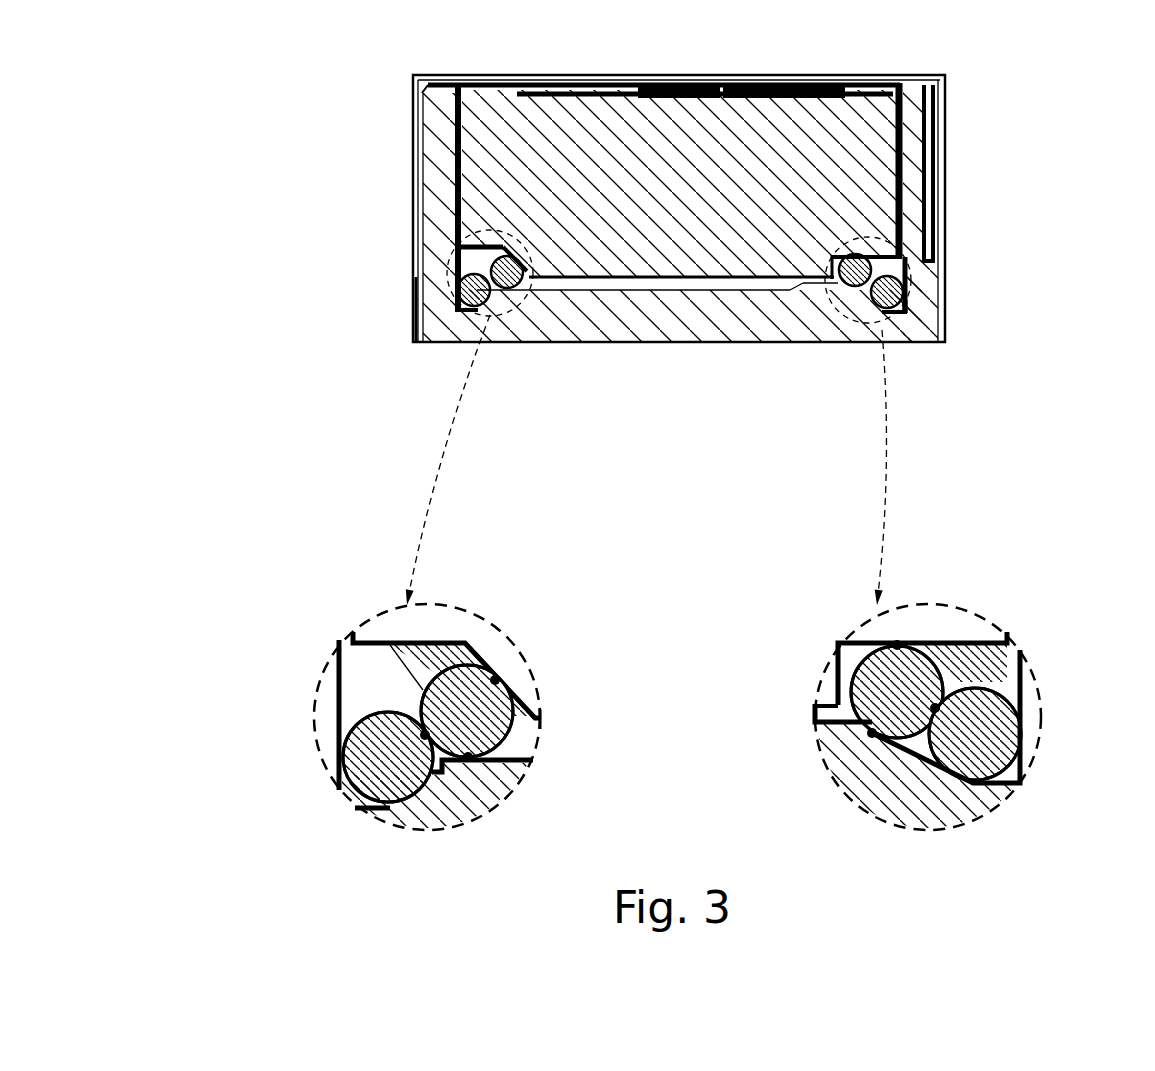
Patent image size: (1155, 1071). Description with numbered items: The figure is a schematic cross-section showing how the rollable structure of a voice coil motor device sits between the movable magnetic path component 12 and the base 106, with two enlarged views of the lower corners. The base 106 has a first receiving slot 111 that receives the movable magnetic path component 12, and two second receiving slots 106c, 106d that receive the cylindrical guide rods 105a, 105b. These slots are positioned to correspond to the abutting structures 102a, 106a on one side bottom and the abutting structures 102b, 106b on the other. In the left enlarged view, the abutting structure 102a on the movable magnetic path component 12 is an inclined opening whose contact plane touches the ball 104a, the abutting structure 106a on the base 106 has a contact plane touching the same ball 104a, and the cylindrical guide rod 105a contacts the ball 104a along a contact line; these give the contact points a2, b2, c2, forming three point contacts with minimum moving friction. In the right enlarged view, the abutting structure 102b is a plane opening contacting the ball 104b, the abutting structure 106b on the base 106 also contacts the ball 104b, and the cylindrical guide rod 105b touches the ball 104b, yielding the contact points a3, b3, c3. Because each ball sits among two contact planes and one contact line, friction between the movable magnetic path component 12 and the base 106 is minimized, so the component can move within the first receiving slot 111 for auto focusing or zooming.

The movable magnetic path component 12 is at (632, 117).
The first receiving slot 111 is at (463, 82).
The abutting structure 102a is at (470, 652).
The abutting structure 102b is at (873, 258).
The ball 104a is at (443, 688).
The ball 104b is at (905, 262).
The cylindrical guide rod 105a is at (368, 728).
The cylindrical guide rod 105b is at (890, 287).
The base 106 is at (433, 240).
The abutting structure 106a is at (505, 763).
The abutting structure 106b is at (862, 297).
The second receiving slot 106c is at (352, 797).
The second receiving slot 106d is at (907, 310).
The contact point a2 is at (495, 680).
The contact point b2 is at (468, 758).
The contact point c2 is at (425, 735).
The contact point a3 is at (897, 645).
The contact point b3 is at (935, 708).
The contact point c3 is at (872, 736).